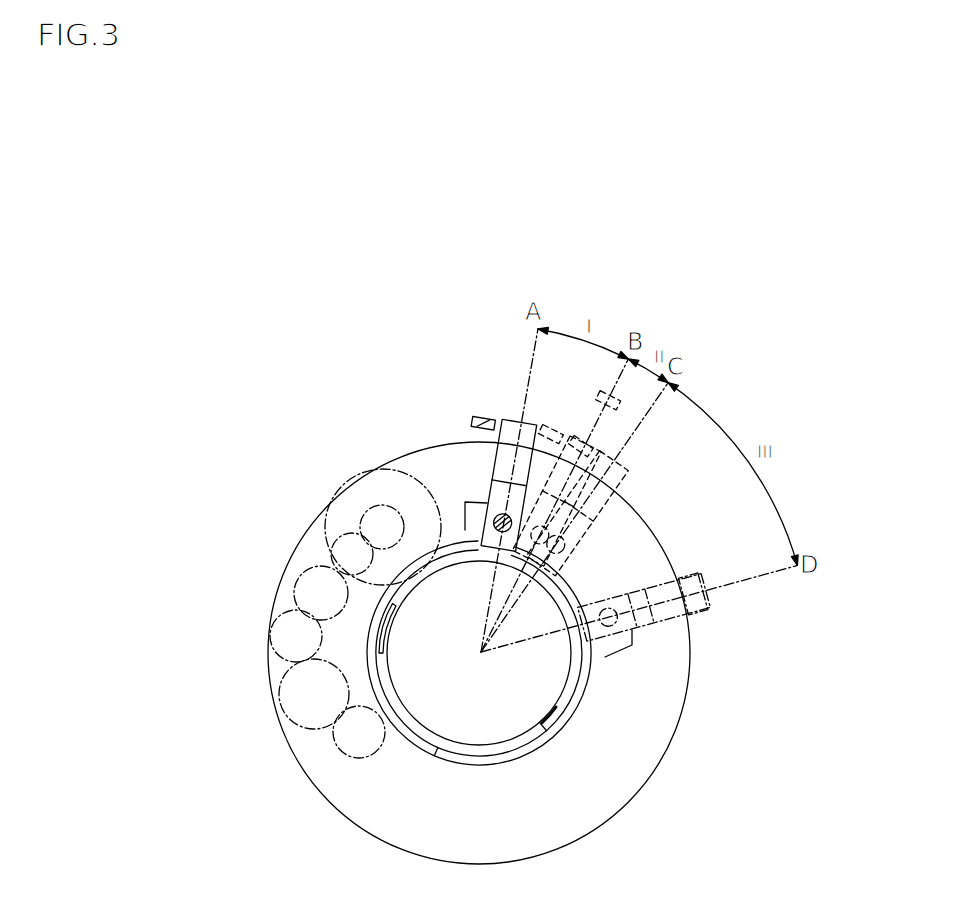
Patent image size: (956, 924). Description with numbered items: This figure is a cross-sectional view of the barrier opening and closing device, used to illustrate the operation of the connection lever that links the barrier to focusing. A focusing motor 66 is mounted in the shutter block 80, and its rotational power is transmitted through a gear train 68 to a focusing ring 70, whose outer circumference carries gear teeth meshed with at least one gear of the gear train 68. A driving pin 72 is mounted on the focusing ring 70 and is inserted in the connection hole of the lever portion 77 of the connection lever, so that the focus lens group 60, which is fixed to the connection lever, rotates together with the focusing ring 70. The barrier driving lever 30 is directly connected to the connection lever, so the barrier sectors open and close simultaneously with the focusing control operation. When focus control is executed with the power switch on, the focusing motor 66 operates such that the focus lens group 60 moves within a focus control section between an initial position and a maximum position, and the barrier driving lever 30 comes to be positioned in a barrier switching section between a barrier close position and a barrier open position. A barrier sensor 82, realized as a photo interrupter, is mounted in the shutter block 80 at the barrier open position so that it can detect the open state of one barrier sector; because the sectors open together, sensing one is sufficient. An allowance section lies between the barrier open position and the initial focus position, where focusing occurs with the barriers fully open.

The barrier driving lever 30 is at (478, 416).
The focus lens group 60 is at (457, 748).
The focusing motor 66 is at (378, 484).
The gear train 68 is at (282, 599).
The focusing ring 70 is at (545, 740).
The driving pin 72 is at (490, 508).
The lever portion 77 is at (510, 430).
The shutter block 80 is at (548, 842).
The barrier sensor 82 is at (615, 400).